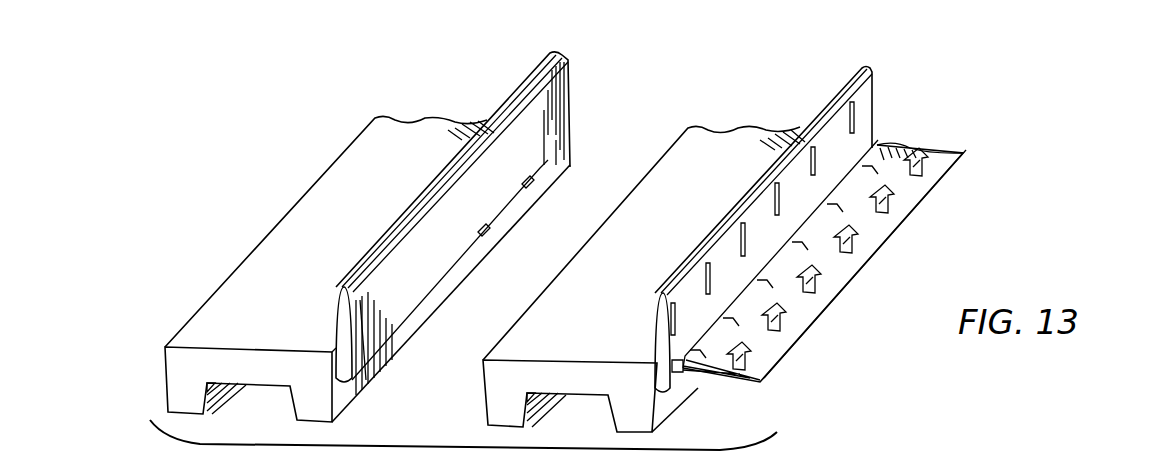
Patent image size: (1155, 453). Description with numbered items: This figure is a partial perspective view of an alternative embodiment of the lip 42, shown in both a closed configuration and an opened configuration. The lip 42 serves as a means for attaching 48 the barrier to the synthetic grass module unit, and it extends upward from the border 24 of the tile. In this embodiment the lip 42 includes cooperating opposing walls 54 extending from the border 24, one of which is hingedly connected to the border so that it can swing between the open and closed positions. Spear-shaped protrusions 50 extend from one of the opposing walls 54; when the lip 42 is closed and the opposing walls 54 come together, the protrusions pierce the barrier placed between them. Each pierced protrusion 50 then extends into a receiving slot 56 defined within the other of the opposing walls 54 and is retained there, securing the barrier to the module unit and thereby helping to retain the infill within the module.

The border 24 is at (259, 378).
The lip 42 is at (563, 53).
The means for attaching 48 is at (326, 346).
The spear-shaped protrusion 50 is at (752, 343).
The opposing walls 54 is at (828, 136).
The receiving slot 56 is at (775, 198).